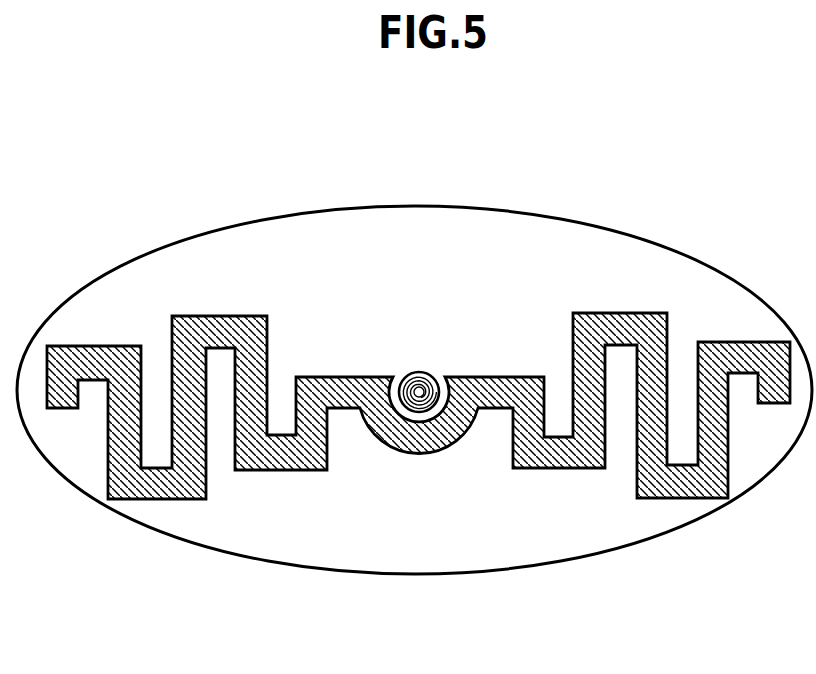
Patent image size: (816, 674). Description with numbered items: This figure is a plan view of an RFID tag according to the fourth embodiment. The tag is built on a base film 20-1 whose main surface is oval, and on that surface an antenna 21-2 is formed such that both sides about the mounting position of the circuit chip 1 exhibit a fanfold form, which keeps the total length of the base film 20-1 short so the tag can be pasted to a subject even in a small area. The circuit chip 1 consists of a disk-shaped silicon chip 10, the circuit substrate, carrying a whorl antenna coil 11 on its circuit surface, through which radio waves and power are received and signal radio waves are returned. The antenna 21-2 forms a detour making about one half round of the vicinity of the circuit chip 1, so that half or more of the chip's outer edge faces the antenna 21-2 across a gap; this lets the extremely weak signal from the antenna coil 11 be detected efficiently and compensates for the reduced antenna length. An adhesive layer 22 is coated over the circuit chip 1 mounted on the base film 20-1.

The circuit chip 1 is at (512, 138).
The silicon chip 10 is at (441, 384).
The antenna coil 11 is at (414, 367).
The base film 20-1 is at (490, 537).
The antenna 21-2 is at (640, 407).
The adhesive layer 22 is at (380, 443).